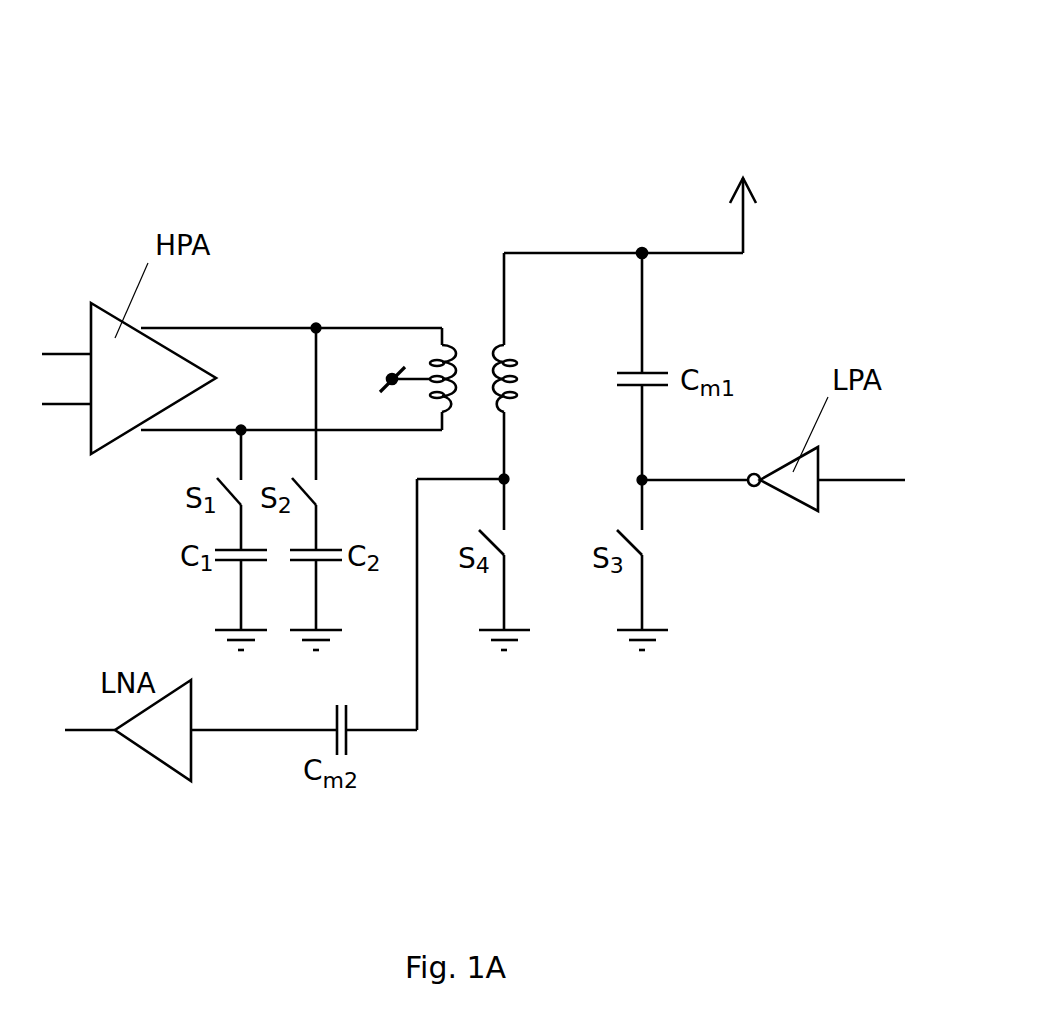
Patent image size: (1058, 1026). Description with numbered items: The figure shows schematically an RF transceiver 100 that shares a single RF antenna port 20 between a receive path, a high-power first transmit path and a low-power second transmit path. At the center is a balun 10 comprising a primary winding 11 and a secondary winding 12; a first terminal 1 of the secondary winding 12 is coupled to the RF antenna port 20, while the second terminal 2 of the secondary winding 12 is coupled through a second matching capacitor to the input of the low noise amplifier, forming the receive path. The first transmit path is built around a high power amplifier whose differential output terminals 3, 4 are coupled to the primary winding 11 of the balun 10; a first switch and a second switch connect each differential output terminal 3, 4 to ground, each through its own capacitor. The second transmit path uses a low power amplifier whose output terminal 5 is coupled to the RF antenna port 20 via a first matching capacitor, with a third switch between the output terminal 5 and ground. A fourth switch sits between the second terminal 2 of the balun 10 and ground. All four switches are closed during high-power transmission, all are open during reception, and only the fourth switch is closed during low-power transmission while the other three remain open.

The RF transceiver 100 is at (823, 142).
The RF antenna port 20 is at (719, 218).
The balun 10 is at (480, 356).
The primary winding 11 is at (430, 398).
The secondary winding 12 is at (518, 380).
The first terminal 1 is at (573, 276).
The second terminal 2 is at (480, 497).
The differential output terminal 3 is at (291, 385).
The differential output terminal 4 is at (291, 435).
The output terminal 5 is at (692, 463).